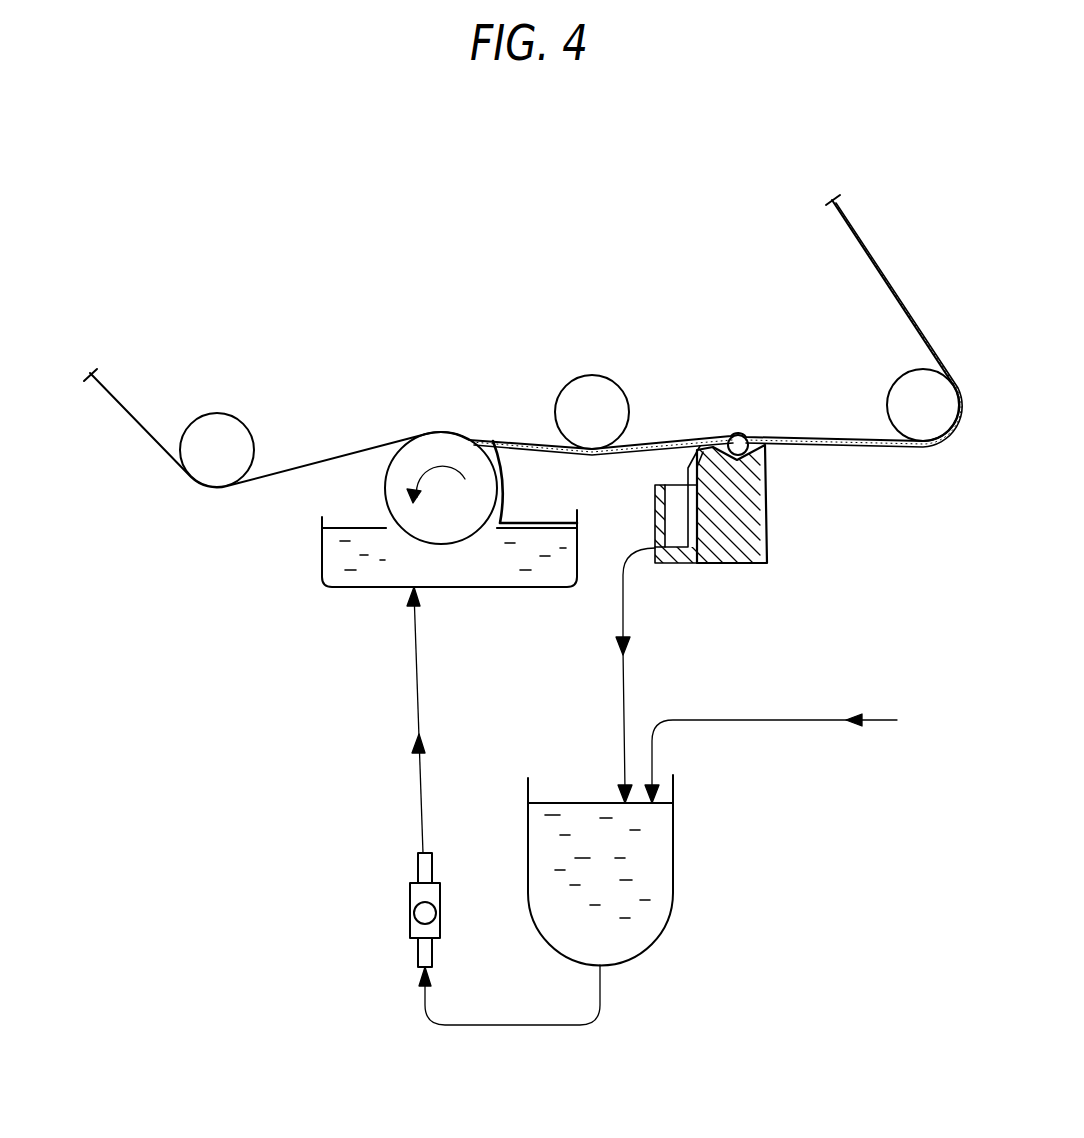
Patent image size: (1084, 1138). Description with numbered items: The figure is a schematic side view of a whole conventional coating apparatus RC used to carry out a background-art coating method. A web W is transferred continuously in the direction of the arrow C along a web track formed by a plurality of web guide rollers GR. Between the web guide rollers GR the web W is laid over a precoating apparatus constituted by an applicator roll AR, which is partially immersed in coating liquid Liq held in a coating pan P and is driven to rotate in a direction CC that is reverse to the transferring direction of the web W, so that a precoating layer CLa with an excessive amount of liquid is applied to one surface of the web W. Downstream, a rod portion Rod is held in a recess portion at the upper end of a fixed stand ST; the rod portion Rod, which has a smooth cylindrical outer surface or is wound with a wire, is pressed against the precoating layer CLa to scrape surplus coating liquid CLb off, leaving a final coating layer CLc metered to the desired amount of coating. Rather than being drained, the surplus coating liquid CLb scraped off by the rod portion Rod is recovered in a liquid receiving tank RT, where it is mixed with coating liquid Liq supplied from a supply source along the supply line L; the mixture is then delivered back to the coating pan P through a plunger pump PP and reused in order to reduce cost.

The coating apparatus RC is at (322, 264).
The web W is at (148, 418).
The web guide rollers GR is at (245, 425).
The arrow C is at (368, 432).
The direction CC is at (440, 455).
The applicator roll AR is at (385, 483).
The precoating layer CLa is at (545, 450).
The rod portion Rod is at (770, 475).
The final coating layer CLc is at (880, 448).
The fixed stand ST is at (768, 530).
The coating pan P is at (322, 557).
The coating liquid line L is at (497, 542).
The surplus coating liquid CLb is at (625, 615).
The liquid receiving tank RT is at (673, 835).
The coating liquid Liq is at (628, 882).
The plunger pump PP is at (410, 935).